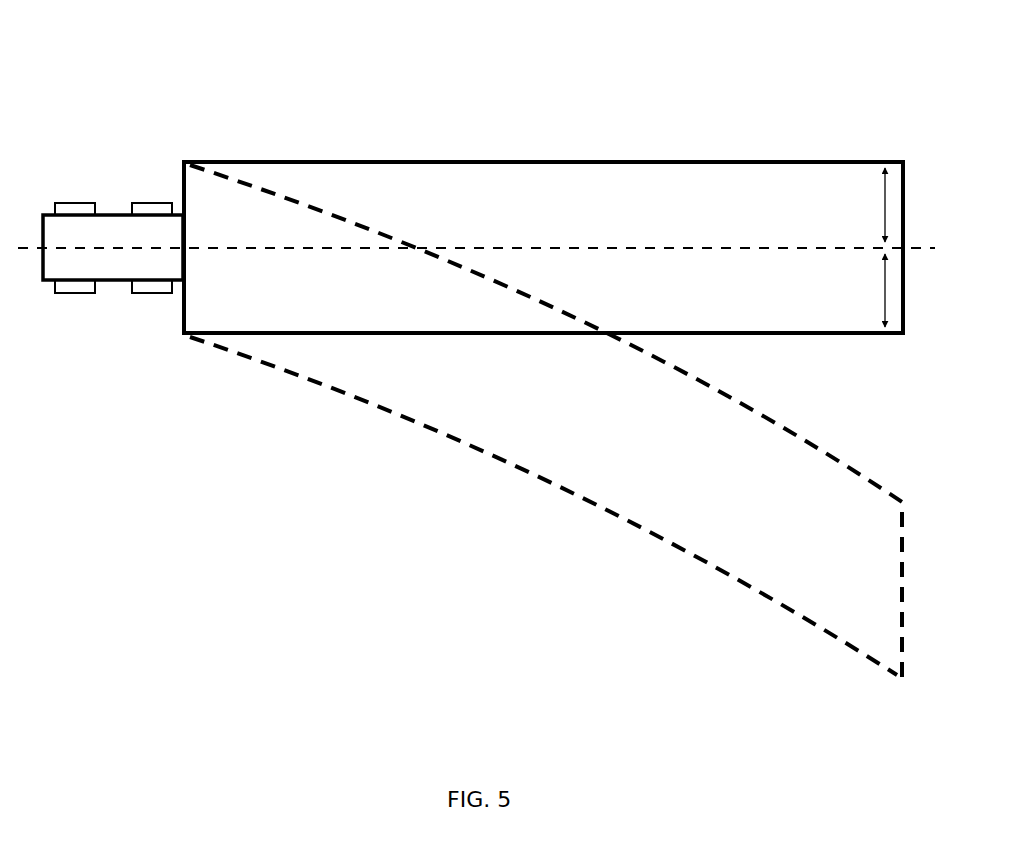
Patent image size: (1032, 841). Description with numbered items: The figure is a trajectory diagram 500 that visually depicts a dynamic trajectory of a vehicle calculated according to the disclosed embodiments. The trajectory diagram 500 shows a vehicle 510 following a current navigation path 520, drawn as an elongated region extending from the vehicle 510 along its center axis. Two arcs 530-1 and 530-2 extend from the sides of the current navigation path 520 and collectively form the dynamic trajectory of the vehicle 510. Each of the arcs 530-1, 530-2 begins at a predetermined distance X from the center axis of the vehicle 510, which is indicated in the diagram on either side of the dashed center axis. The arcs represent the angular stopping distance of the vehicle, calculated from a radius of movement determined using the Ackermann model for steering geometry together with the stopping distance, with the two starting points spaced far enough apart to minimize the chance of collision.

The trajectory diagram 500 is at (822, 63).
The vehicle 510 is at (105, 208).
The current navigation path 520 is at (455, 154).
The arc 530-1 is at (818, 434).
The arc 530-2 is at (768, 600).